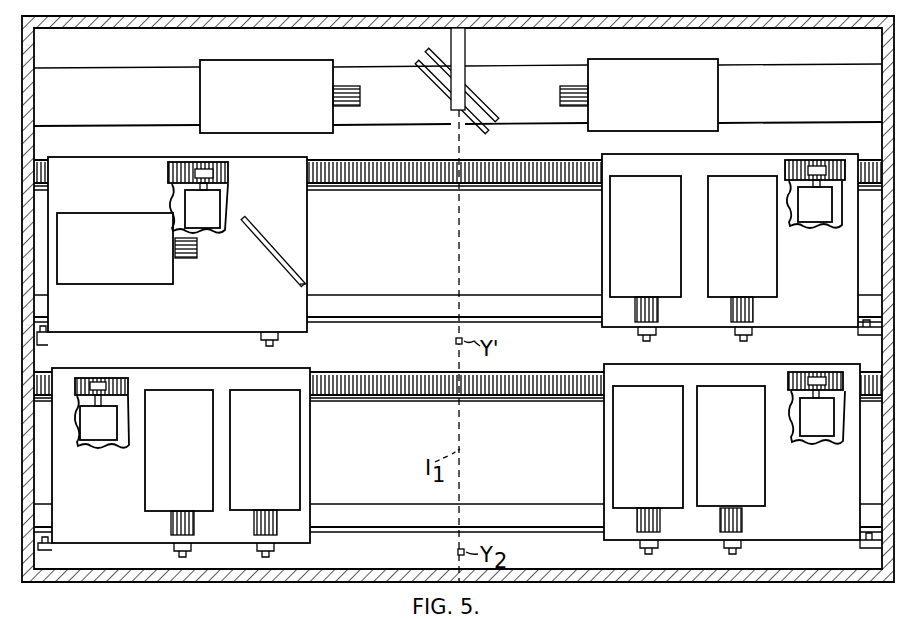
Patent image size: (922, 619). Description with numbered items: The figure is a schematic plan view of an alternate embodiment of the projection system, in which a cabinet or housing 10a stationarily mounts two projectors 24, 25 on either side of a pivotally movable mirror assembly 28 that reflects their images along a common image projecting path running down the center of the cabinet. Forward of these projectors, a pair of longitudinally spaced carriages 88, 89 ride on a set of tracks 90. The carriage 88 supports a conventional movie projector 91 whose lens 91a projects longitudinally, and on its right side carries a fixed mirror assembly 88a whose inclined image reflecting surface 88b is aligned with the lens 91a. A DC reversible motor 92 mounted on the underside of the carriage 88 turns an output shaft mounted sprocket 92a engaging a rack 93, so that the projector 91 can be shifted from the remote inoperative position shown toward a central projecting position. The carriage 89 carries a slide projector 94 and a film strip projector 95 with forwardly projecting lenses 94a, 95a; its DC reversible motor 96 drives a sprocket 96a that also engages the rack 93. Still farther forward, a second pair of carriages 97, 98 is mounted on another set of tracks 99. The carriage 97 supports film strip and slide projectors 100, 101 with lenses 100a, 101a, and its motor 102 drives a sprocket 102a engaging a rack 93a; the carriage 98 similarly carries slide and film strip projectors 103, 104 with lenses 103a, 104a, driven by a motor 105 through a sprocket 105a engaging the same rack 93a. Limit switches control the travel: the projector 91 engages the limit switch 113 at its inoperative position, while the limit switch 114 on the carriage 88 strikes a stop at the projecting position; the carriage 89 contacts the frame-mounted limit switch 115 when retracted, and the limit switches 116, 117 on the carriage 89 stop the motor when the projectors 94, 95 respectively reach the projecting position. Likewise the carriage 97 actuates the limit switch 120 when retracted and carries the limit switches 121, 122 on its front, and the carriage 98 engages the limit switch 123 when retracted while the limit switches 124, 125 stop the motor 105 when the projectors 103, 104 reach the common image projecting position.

The cabinet or housing 10a is at (147, 33).
The projector 24 is at (277, 110).
The projector 25 is at (670, 109).
The pivotally movable mirror assembly 28 is at (483, 78).
The carriage 88 is at (198, 244).
The fixed mirror assembly 88a is at (306, 284).
The image reflecting surface 88b is at (271, 256).
The carriage 89 is at (602, 202).
The set of tracks 90 is at (384, 163).
The movie projector 91 is at (124, 256).
The lens 91a is at (187, 258).
The DC reversible motor 92 is at (214, 221).
The output shaft mounted sprocket 92a is at (216, 172).
The rack 93 is at (185, 172).
The rack 93a is at (128, 382).
The slide projector 94 is at (658, 250).
The lens 94a is at (658, 314).
The film strip projector 95 is at (756, 250).
The lens 95a is at (753, 314).
The DC reversible motor 96 is at (826, 217).
The sprocket 96a is at (803, 172).
The carriage 97 is at (310, 426).
The carriage 98 is at (604, 421).
The set of tracks 99 is at (403, 372).
The film strip projector 100 is at (283, 464).
The lens 100a is at (279, 538).
The slide projector 101 is at (193, 464).
The lens 101a is at (188, 538).
The DC reversible motor 102 is at (98, 440).
The output shaft mounted sprocket 102a is at (92, 378).
The slide projector 103 is at (668, 460).
The lens 103a is at (637, 524).
The film strip projector 104 is at (751, 460).
The lens 104a is at (740, 524).
The DC reversible motor 105 is at (815, 436).
The sprocket 105a is at (808, 353).
The limit switch 113 is at (52, 332).
The limit switch 114 is at (275, 341).
The limit switch 115 is at (868, 338).
The limit switch 116 is at (645, 338).
The limit switch 117 is at (738, 338).
The limit switch 120 is at (55, 550).
The limit switch 121 is at (257, 549).
The limit switch 122 is at (172, 549).
The limit switch 123 is at (866, 546).
The limit switch 124 is at (658, 555).
The limit switch 125 is at (735, 543).